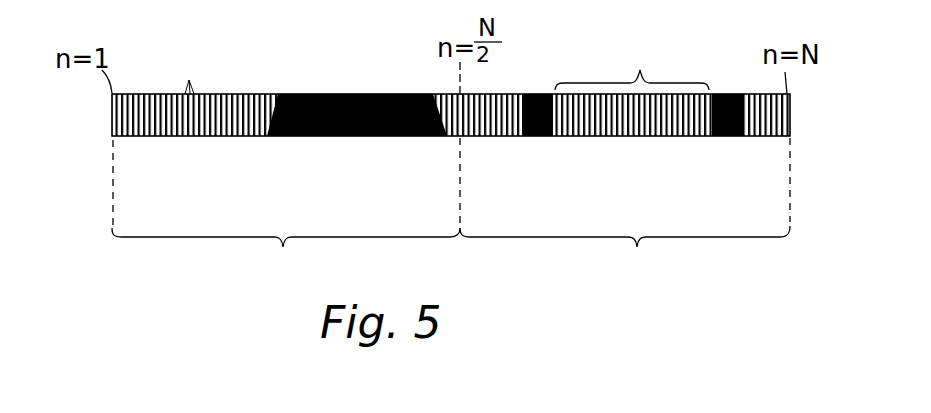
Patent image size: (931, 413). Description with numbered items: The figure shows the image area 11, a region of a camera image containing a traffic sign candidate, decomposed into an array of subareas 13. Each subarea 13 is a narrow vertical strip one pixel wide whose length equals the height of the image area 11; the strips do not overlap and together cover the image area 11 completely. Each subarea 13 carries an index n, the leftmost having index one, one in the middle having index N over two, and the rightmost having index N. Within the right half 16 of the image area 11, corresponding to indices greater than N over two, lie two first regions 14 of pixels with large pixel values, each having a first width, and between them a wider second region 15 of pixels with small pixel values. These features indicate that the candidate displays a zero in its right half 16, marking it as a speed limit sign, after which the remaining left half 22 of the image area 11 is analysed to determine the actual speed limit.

The image area 11 is at (108, 134).
The subarea 13 is at (189, 80).
The first region 14 is at (535, 136).
The second region 15 is at (632, 77).
The right half 16 is at (625, 217).
The left half 22 is at (286, 218).